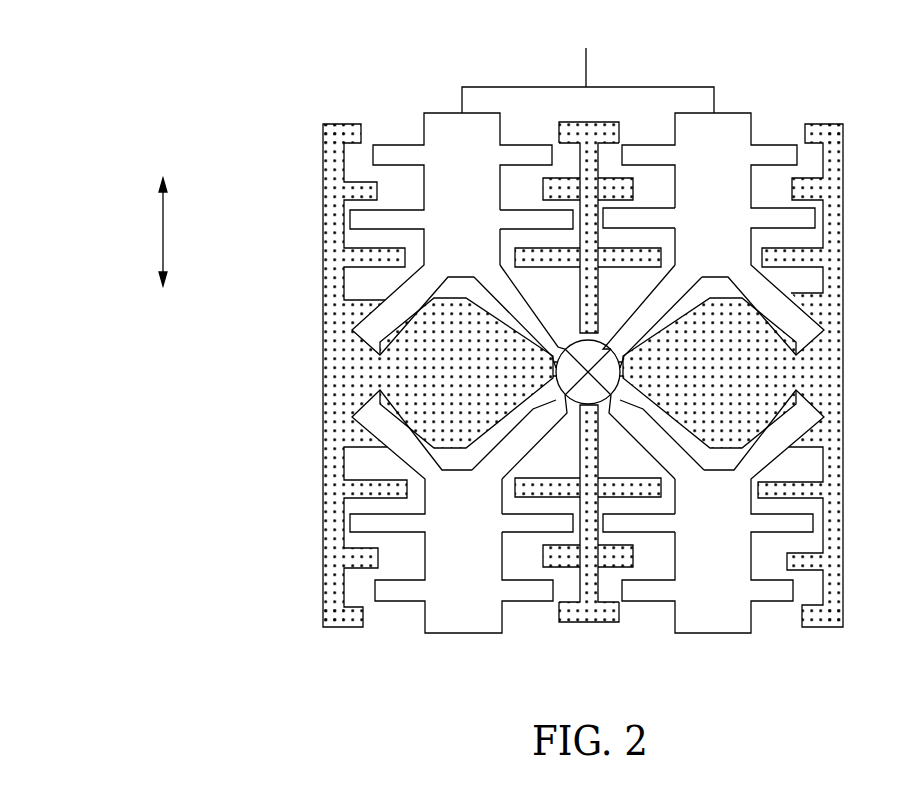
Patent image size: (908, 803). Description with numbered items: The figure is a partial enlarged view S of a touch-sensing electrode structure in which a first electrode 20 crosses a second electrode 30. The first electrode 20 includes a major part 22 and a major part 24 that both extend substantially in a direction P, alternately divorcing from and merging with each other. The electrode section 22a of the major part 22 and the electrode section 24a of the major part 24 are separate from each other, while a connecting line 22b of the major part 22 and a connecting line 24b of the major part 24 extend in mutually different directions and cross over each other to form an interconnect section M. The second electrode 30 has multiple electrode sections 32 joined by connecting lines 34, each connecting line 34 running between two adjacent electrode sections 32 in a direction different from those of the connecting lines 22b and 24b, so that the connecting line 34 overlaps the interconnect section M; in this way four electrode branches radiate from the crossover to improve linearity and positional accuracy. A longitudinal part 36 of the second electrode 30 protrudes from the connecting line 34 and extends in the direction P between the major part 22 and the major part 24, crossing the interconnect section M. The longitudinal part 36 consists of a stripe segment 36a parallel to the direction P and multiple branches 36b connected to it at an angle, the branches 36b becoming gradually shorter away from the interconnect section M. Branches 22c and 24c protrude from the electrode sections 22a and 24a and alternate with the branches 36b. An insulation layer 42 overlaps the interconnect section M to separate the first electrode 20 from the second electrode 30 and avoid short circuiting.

The first electrode 20 is at (585, 335).
The major part 22 is at (585, 336).
The major part 24 is at (587, 335).
The electrode section 22a is at (482, 210).
The connecting line 22b is at (572, 338).
The branch 22c is at (542, 222).
The electrode section 24a is at (734, 212).
The connecting line 24b is at (608, 338).
The branch 24c is at (627, 213).
The second electrode 30 is at (324, 332).
The electrode section 32 is at (412, 373).
The connecting line 34 is at (620, 348).
The longitudinal part 36 is at (588, 335).
The stripe segment 36a is at (578, 160).
The branch 36b is at (612, 126).
The insulation layer 42 is at (557, 357).
The interconnect section M is at (608, 410).
The direction P is at (172, 232).
The partial enlarged view S is at (137, 81).